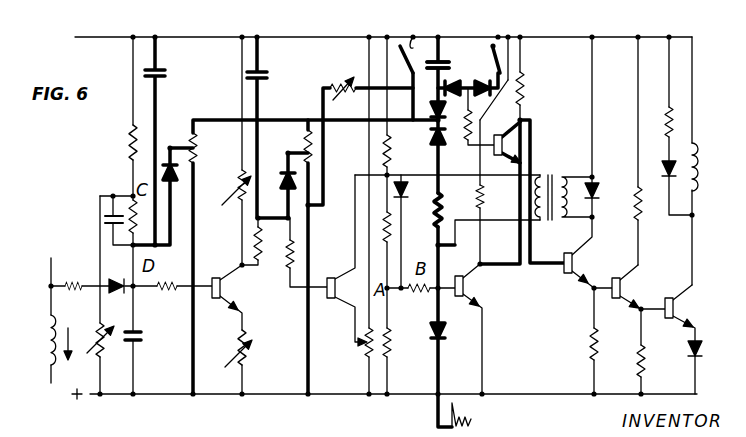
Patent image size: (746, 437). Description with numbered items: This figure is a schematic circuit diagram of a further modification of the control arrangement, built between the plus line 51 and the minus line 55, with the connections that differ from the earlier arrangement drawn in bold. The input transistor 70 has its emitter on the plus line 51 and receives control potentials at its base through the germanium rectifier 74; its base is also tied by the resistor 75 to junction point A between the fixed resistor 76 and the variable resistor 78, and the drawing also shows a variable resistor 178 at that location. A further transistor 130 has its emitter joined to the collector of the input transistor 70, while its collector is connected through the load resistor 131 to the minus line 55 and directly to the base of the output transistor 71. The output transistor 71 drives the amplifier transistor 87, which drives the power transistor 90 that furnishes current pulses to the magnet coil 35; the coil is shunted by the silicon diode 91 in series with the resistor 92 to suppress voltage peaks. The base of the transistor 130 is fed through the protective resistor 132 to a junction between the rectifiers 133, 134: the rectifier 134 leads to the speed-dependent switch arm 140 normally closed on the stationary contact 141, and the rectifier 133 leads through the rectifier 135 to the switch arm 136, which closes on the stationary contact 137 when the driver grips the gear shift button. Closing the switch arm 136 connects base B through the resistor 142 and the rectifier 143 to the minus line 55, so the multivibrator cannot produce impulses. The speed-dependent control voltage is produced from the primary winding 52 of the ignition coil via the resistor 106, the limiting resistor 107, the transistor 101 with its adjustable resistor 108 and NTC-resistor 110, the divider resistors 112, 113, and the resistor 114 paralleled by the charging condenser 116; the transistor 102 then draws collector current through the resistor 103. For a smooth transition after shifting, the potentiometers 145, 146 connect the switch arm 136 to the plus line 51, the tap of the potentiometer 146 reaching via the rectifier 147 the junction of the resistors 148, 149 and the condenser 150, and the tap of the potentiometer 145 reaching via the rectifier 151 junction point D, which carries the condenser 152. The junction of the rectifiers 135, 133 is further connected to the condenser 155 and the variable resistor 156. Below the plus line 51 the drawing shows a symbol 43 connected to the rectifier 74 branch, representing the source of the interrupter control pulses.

The minus line 55 is at (540, 37).
The plus line 51 is at (271, 396).
The condenser 152 is at (167, 72).
The condenser 150 is at (268, 72).
The condenser 155 is at (441, 66).
The resistor 112 is at (128, 135).
The resistor 114 is at (130, 205).
The charging condenser 116 is at (104, 219).
The resistor 113 is at (104, 356).
The primary winding of the ignition coil 52 is at (56, 368).
The resistor 106 is at (81, 272).
The limiting resistor 107 is at (168, 295).
The NTC-resistor 110 is at (228, 196).
The potentiometer 145 is at (198, 150).
The rectifier 151 is at (163, 165).
The resistor 148 is at (254, 247).
The resistor 149 is at (286, 265).
The transistor 101 is at (226, 295).
The adjustable resistor 108 is at (238, 355).
The rectifier 147 is at (283, 168).
The potentiometer 146 is at (312, 148).
The variable resistor 156 is at (341, 80).
The resistor 103 is at (383, 155).
The rectifier 135 is at (432, 120).
The rectifier 143 is at (411, 174).
The movable switch arm 136 is at (403, 67).
The stationary contact 137 is at (420, 42).
The rectifier 133 is at (467, 86).
The stationary contact 141 is at (494, 43).
The movable switch arm 140 is at (510, 64).
The load resistor 131 is at (526, 90).
The rectifier 134 is at (500, 103).
The transistor 130 is at (505, 145).
The protective resistor 132 is at (466, 141).
The resistor 142 is at (442, 214).
The input transistor 70 is at (468, 293).
The resistor 75 is at (415, 295).
The germanium rectifier 74 is at (446, 334).
The variable resistor 78 is at (391, 350).
The variable resistor 178 is at (365, 351).
The fixed resistor 76 is at (383, 228).
The transistor 102 is at (342, 280).
The ignition coil 43 is at (462, 412).
The output transistor 71 is at (582, 262).
The amplifier transistor 87 is at (628, 286).
The power transistor 90 is at (680, 308).
The resistor 92 is at (666, 122).
The silicon diode 91 is at (668, 177).
The magnet coil 35 is at (691, 197).